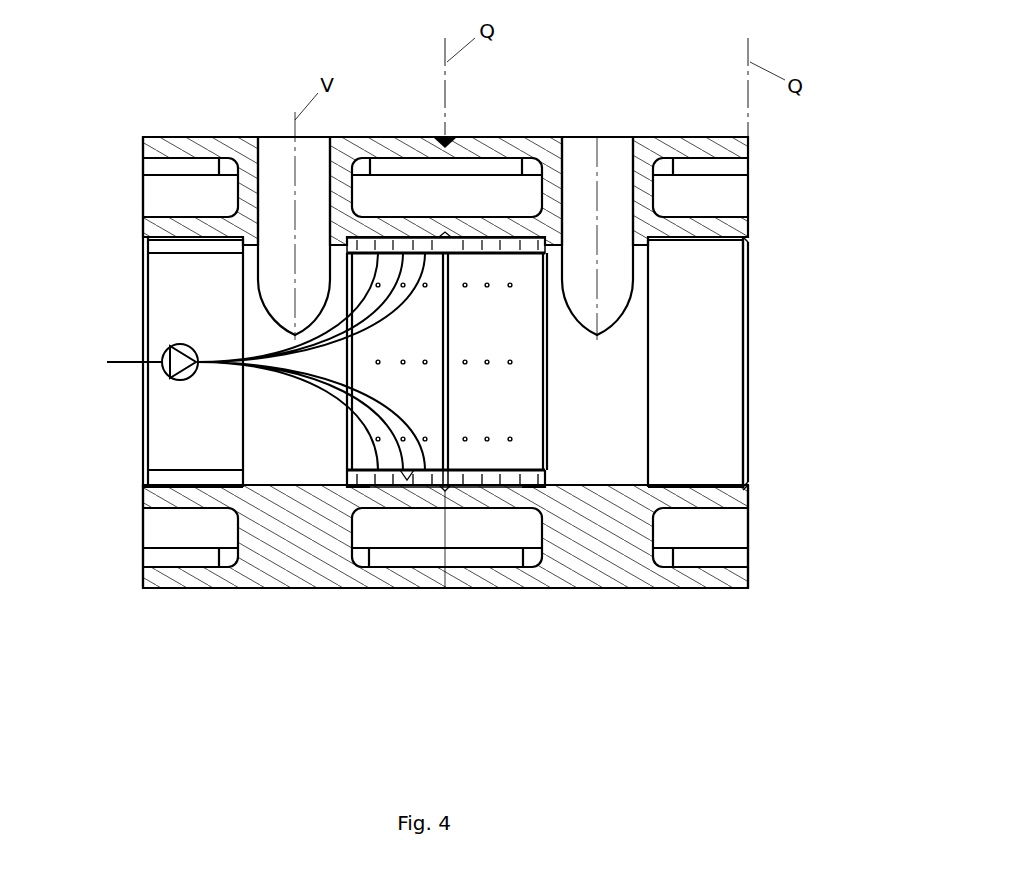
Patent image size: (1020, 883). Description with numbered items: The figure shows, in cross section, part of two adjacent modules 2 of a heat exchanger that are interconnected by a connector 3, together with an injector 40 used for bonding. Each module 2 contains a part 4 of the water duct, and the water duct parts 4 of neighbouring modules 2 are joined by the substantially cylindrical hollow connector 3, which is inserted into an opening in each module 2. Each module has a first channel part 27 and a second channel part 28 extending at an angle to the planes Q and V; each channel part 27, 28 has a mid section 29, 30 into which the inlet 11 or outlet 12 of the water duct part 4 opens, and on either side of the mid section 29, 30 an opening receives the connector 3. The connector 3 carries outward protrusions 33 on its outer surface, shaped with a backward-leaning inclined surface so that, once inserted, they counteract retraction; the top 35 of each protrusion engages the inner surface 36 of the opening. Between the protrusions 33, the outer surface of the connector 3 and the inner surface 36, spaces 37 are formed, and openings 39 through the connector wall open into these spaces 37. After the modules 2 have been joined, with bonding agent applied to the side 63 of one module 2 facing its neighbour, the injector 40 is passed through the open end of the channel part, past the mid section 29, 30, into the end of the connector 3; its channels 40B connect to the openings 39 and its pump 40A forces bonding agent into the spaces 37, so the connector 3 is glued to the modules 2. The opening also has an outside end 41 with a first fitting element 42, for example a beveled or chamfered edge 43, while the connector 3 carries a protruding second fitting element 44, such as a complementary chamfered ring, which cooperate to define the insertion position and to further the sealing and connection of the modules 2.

The module 2 is at (298, 543).
The connector 3 is at (472, 380).
The water duct part 4 is at (275, 172).
The inlet 11 is at (619, 206).
The outlet 12 is at (607, 300).
The first channel part 27 is at (759, 363).
The second channel part 28 is at (690, 357).
The mid section 29 is at (751, 363).
The mid section 30 is at (632, 415).
The protrusions 33 is at (394, 490).
The top 35 is at (496, 490).
The inner surface 36 is at (483, 243).
The spaces 37 is at (407, 488).
The openings 39 is at (378, 483).
The injector 40 is at (187, 427).
The pump 40A is at (177, 358).
The channels 40B is at (292, 382).
The outside end 41 is at (752, 497).
The first fitting element 42 is at (750, 483).
The beveled or chamfered edge 43 is at (750, 235).
The second fitting element 44 is at (443, 483).
The side 63 is at (440, 140).